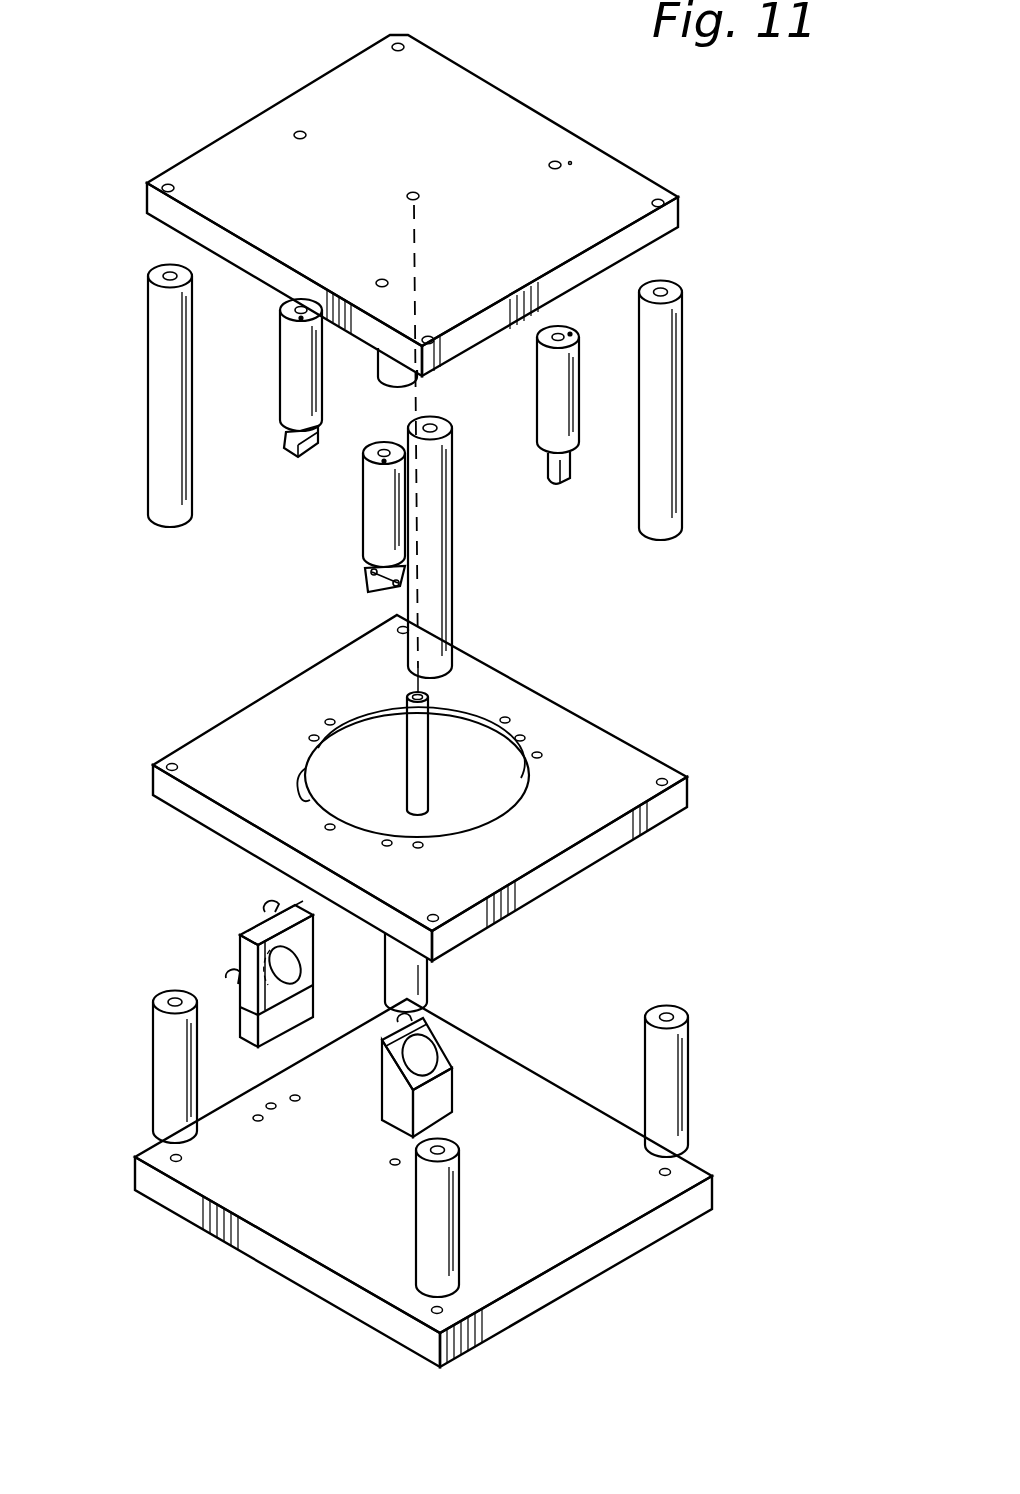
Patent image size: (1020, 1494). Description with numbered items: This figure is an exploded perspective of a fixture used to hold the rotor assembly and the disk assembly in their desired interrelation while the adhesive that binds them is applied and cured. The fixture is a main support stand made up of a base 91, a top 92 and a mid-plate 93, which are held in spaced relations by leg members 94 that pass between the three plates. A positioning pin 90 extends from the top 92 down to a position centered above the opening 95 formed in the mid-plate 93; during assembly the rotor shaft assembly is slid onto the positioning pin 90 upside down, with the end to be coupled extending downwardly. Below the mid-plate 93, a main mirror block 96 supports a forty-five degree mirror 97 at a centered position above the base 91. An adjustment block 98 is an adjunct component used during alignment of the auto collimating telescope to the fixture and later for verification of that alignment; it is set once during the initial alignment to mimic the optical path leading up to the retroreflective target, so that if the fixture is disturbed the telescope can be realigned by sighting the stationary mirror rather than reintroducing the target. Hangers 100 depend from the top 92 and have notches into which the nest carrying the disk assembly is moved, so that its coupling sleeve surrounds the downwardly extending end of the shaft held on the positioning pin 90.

The positioning pin 90 is at (407, 756).
The base 91 is at (576, 1196).
The top 92 is at (528, 254).
The mid-plate 93 is at (598, 806).
The leg members 94 is at (172, 458).
The opening 95 is at (503, 745).
The main mirror block 96 is at (435, 1103).
The 45° mirror 97 is at (427, 1055).
The adjustment block 98 is at (308, 970).
The hangers 100 is at (285, 363).